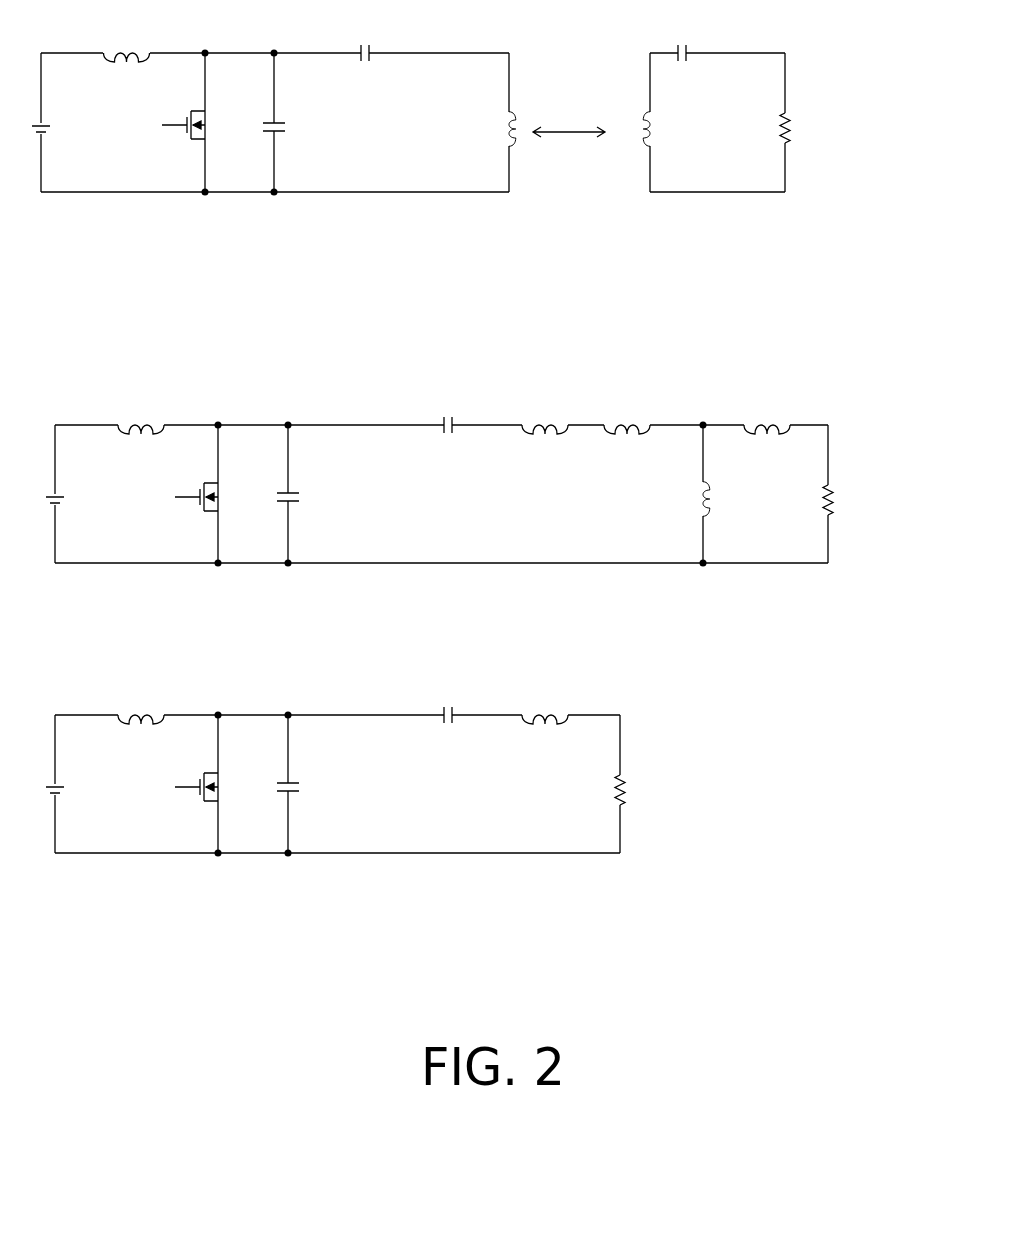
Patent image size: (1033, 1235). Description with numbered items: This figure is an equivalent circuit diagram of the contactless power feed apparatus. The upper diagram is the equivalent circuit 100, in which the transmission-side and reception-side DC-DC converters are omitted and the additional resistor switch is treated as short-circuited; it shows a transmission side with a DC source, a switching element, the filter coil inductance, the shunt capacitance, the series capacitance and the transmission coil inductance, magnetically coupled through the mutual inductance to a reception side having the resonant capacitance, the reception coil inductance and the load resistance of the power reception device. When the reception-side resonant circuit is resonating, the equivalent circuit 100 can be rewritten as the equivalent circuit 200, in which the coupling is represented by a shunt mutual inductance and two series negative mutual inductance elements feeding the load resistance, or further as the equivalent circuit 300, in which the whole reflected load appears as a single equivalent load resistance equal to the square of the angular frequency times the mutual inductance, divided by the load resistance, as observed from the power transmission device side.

The equivalent circuit 100 is at (819, 243).
The equivalent circuit 200 is at (867, 577).
The equivalent circuit 300 is at (778, 897).